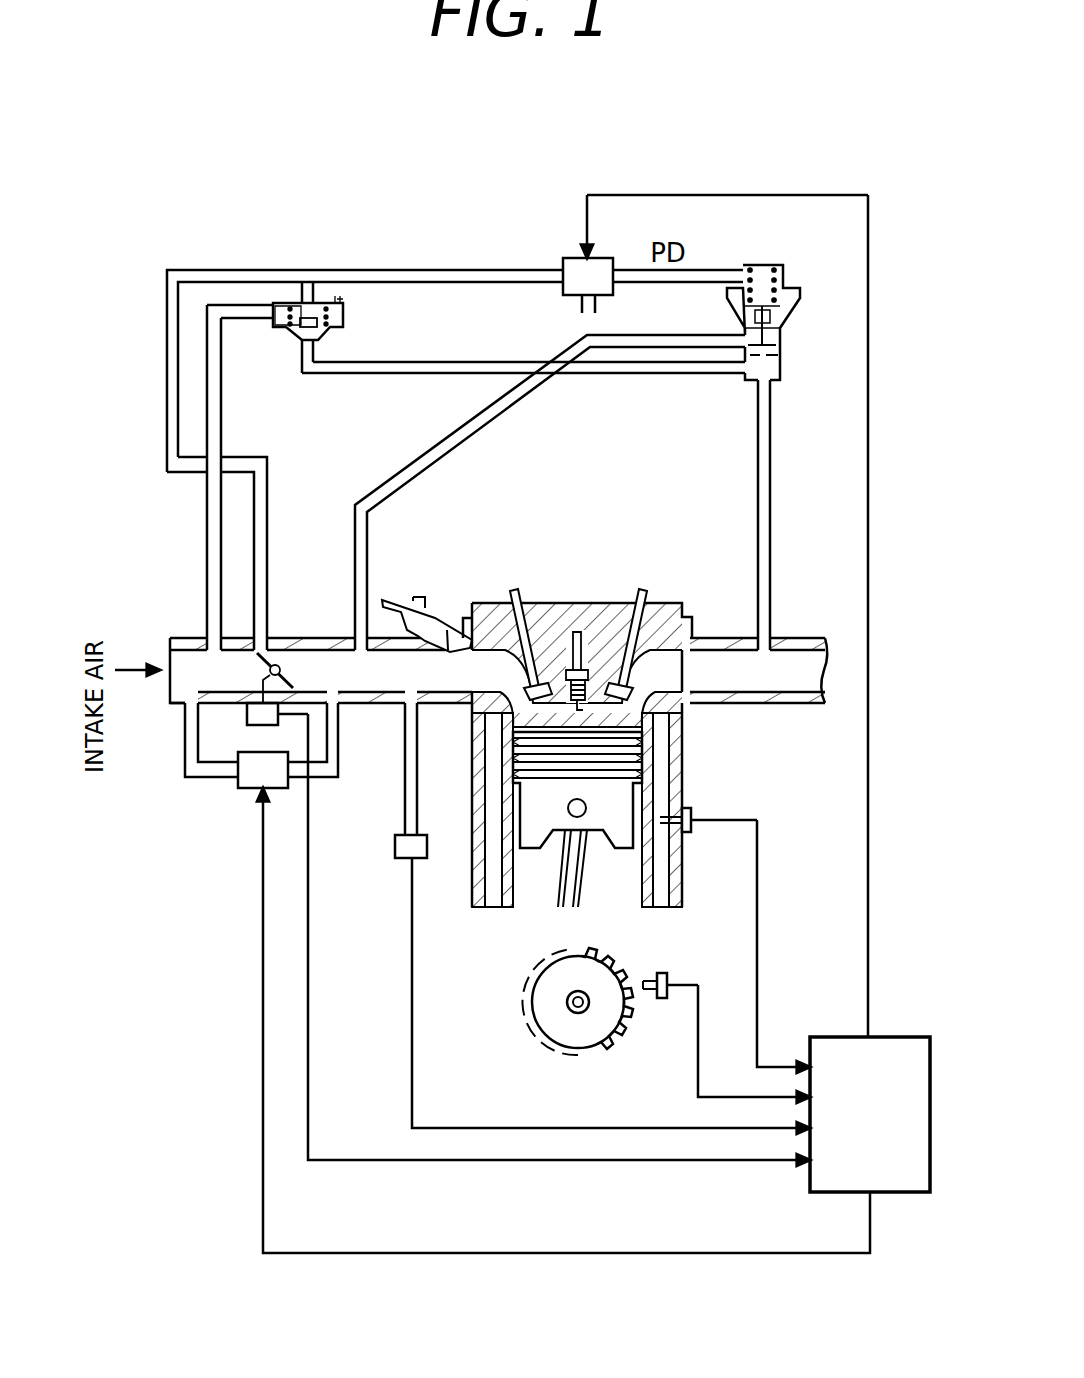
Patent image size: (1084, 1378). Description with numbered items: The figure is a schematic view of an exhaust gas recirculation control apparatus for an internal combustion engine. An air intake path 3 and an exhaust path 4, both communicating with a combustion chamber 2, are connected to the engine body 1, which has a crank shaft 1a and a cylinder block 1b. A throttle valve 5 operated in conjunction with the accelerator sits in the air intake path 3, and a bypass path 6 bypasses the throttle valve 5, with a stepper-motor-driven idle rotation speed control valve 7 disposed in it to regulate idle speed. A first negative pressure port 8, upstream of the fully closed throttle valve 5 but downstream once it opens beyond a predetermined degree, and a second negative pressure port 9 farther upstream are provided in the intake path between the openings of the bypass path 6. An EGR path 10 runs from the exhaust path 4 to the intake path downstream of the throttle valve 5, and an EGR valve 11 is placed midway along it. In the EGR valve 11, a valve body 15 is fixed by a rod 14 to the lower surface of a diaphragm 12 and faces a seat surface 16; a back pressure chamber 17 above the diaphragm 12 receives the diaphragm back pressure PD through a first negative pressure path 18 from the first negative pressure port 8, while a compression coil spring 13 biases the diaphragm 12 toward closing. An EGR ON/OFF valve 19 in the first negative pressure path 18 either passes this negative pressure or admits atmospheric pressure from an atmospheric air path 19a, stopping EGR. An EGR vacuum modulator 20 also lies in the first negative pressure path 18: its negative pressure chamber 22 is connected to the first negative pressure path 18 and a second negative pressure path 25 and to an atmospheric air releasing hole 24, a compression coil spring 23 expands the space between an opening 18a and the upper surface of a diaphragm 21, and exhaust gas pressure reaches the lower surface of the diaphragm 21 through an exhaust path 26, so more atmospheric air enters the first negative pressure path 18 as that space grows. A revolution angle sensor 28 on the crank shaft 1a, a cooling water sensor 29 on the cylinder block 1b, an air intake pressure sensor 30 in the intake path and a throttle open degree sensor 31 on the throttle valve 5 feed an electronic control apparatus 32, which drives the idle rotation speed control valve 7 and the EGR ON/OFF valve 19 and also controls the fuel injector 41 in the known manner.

The engine body 1 is at (600, 822).
The crank shaft 1a is at (579, 1012).
The cylinder block 1b is at (683, 870).
The combustion chamber 2 is at (603, 713).
The air intake path 3 is at (345, 655).
The exhaust path 4 is at (727, 665).
The throttle valve 5 is at (278, 660).
The bypass path 6 is at (192, 778).
The idle rotation speed control valve 7 is at (245, 790).
The first negative pressure port 8 is at (256, 640).
The second negative pressure port 9 is at (210, 640).
The EGR path 10 is at (468, 443).
The EGR valve 11 is at (761, 308).
The diaphragm 12 is at (792, 312).
The compression coil spring 13 is at (777, 266).
The rod 14 is at (748, 320).
The valve body 15 is at (781, 360).
The seat surface 16 is at (748, 374).
The back pressure chamber 17 is at (748, 266).
The first negative pressure path 18 is at (433, 270).
The opening 18a is at (302, 344).
The EGR ON/OFF valve 19 is at (563, 262).
The atmospheric air path 19a is at (580, 306).
The EGR vacuum modulator 20 is at (311, 305).
The diaphragm 21 is at (276, 331).
The negative pressure chamber 22 is at (278, 308).
The compression coil spring 23 is at (292, 305).
The atmospheric air releasing hole 24 is at (337, 298).
The second negative pressure path 25 is at (206, 520).
The exhaust path 26 is at (378, 375).
The revolution angle sensor 28 is at (663, 973).
The cooling water sensor 29 is at (692, 810).
The air intake pressure sensor 30 is at (402, 858).
The throttle open degree sensor 31 is at (247, 713).
The electronic control apparatus 32 is at (900, 1037).
The fuel injector 41 is at (393, 598).